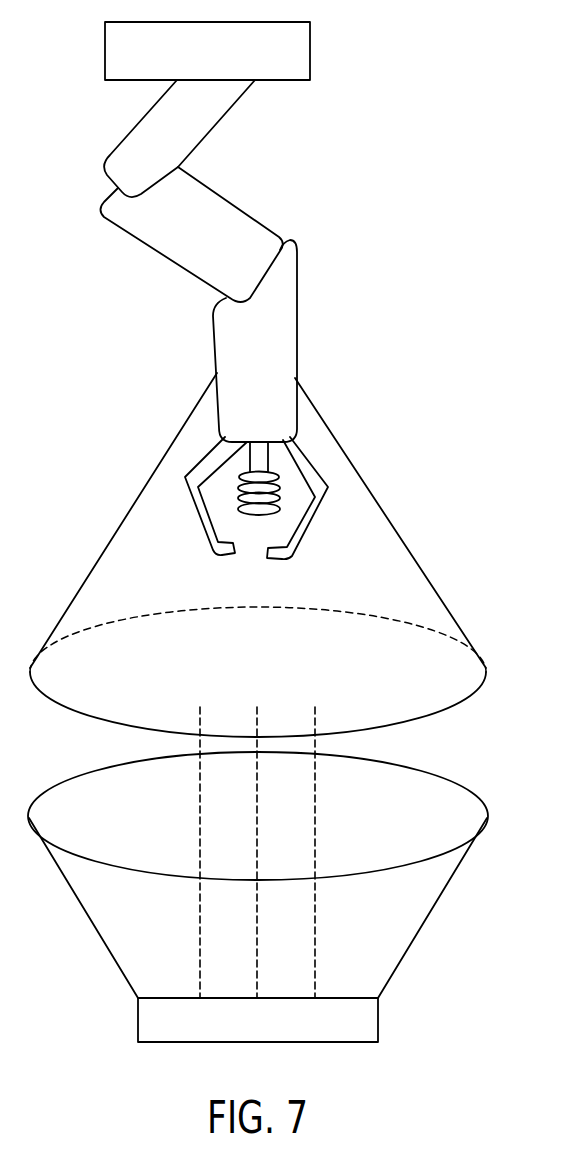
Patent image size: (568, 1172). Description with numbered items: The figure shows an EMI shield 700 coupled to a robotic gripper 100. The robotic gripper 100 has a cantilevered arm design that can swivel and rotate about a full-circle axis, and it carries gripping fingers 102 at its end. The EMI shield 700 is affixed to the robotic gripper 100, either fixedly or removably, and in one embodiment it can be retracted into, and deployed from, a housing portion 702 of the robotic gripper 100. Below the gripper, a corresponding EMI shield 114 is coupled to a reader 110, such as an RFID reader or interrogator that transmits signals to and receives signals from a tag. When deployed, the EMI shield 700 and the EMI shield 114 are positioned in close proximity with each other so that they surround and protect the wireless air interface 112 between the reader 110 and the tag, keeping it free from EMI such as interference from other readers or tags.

The robotic gripper 100 is at (384, 107).
The housing portion 702 is at (297, 330).
The gripping fingers 102 is at (307, 455).
The EMI shield 700 is at (390, 520).
The wireless air interface 112 is at (198, 899).
The EMI shield 114 is at (462, 868).
The reader 110 is at (378, 1023).